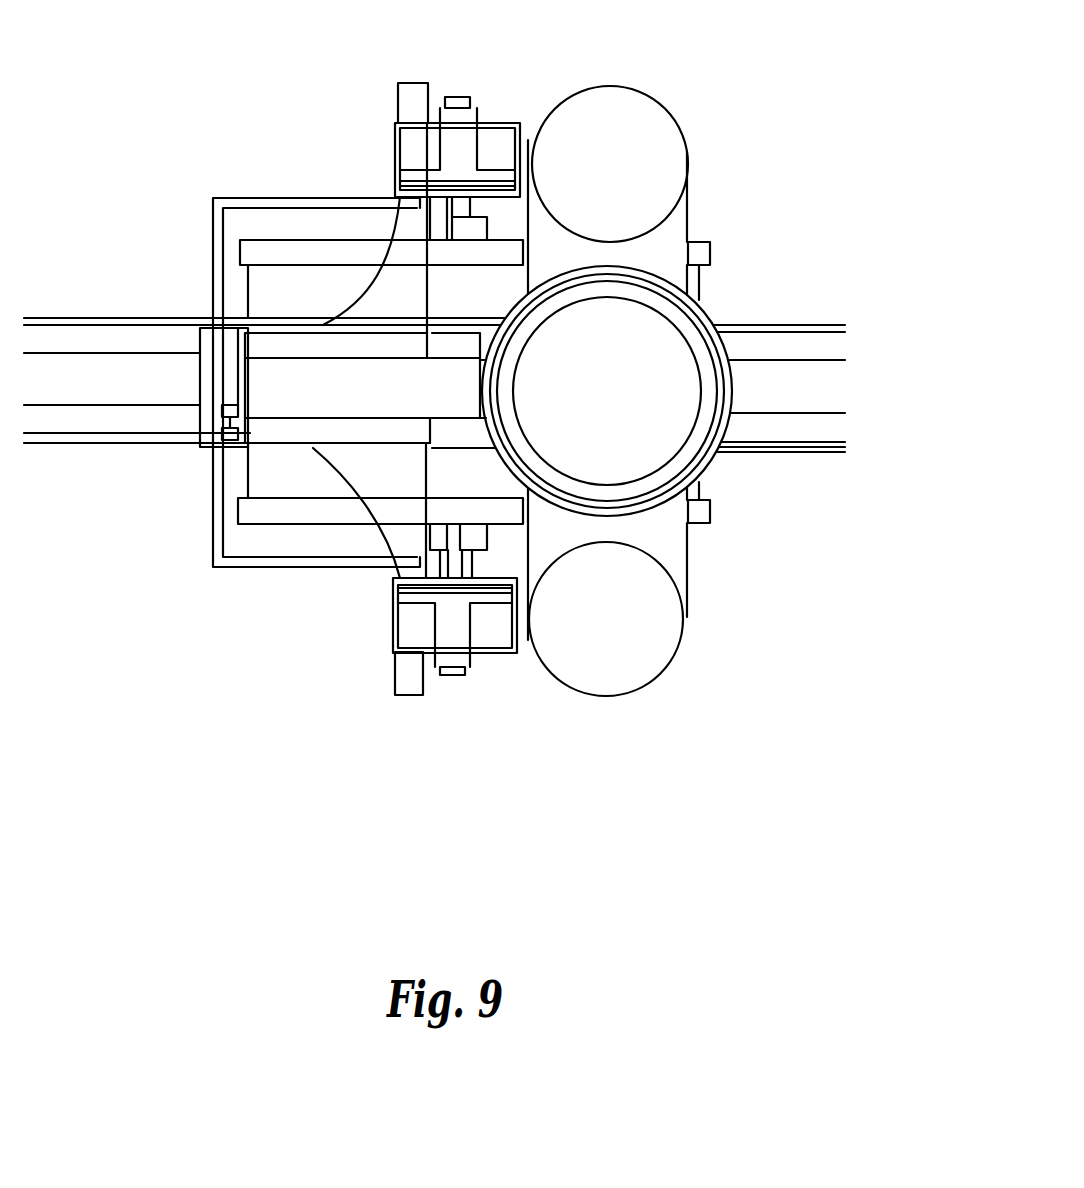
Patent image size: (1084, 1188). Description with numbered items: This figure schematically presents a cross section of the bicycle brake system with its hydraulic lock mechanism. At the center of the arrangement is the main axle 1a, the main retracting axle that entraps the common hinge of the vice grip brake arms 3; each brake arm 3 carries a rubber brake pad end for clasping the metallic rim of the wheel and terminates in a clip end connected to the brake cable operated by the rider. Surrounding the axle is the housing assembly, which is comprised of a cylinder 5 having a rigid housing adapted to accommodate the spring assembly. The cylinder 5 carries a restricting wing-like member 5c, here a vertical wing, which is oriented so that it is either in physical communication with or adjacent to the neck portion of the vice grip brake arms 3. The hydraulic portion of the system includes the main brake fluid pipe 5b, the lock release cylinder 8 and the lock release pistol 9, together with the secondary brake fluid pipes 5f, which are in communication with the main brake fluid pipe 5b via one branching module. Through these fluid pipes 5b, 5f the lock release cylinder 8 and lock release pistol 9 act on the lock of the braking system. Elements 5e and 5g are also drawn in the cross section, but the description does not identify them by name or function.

The vice grip brake arm 3 is at (460, 82).
The lock release pistol 9 is at (460, 152).
The lock release cylinder 8 is at (395, 152).
The hub 5e is at (397, 265).
The main retracting axle 1a is at (315, 368).
The cylinder 5 is at (213, 315).
The restricting wing-like member 5c is at (240, 410).
The upper retaining block 5g is at (193, 417).
The main brake fluid pipe 5b is at (227, 432).
The secondary brake fluid pipe 5f is at (212, 508).